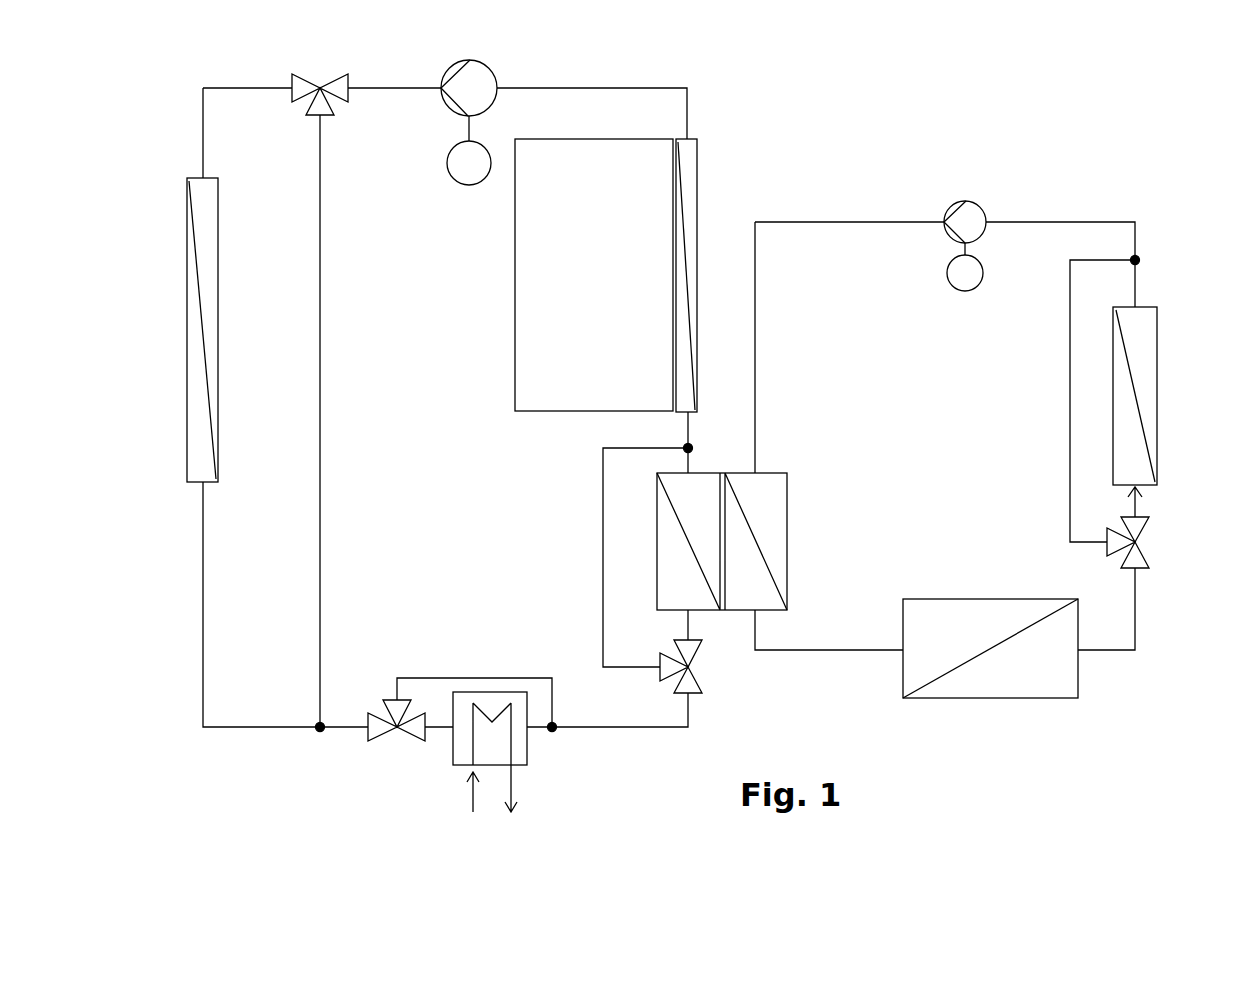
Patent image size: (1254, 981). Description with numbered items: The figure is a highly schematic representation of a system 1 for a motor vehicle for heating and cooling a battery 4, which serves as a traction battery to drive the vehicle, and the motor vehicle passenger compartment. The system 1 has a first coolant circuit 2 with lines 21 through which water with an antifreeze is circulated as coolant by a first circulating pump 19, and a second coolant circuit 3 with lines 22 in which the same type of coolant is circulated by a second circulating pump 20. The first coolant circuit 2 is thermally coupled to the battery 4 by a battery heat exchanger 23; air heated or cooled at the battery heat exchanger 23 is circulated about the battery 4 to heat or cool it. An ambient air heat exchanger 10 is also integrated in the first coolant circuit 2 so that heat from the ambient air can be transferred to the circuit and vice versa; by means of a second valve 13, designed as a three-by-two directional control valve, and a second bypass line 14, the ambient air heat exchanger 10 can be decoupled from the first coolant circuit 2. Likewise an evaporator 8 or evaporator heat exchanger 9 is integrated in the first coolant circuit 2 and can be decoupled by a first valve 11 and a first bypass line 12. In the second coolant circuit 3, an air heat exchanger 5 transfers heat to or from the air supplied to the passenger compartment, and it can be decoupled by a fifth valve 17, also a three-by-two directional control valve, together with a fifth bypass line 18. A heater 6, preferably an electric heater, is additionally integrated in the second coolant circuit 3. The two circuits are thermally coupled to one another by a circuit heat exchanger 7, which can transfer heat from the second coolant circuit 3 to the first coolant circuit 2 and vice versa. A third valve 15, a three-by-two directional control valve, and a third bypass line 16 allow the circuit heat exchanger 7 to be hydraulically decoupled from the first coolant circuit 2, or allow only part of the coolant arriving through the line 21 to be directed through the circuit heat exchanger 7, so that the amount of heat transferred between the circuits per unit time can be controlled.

The system 1 is at (1063, 755).
The first coolant circuit 2 is at (752, 128).
The second coolant circuit 3 is at (955, 160).
The battery 4 is at (515, 382).
The air heat exchanger 5 is at (1160, 357).
The heater 6 is at (1025, 697).
The circuit heat exchanger 7 is at (780, 503).
The evaporator 8 is at (544, 752).
The evaporator heat exchanger 9 is at (520, 752).
The ambient air heat exchanger 10 is at (208, 275).
The first valve 11 is at (385, 718).
The first bypass line 12 is at (455, 678).
The second valve 13 is at (313, 105).
The second bypass line 14 is at (320, 520).
The third valve 15 is at (697, 690).
The third bypass line 16 is at (600, 572).
The fifth valve 17 is at (1150, 565).
The fifth bypass line 18 is at (1070, 385).
The first circulating pump 19 is at (455, 183).
The second circulating pump 20 is at (955, 293).
The lines 21 is at (620, 88).
The lines 22 is at (1060, 222).
The battery heat exchanger 23 is at (693, 168).